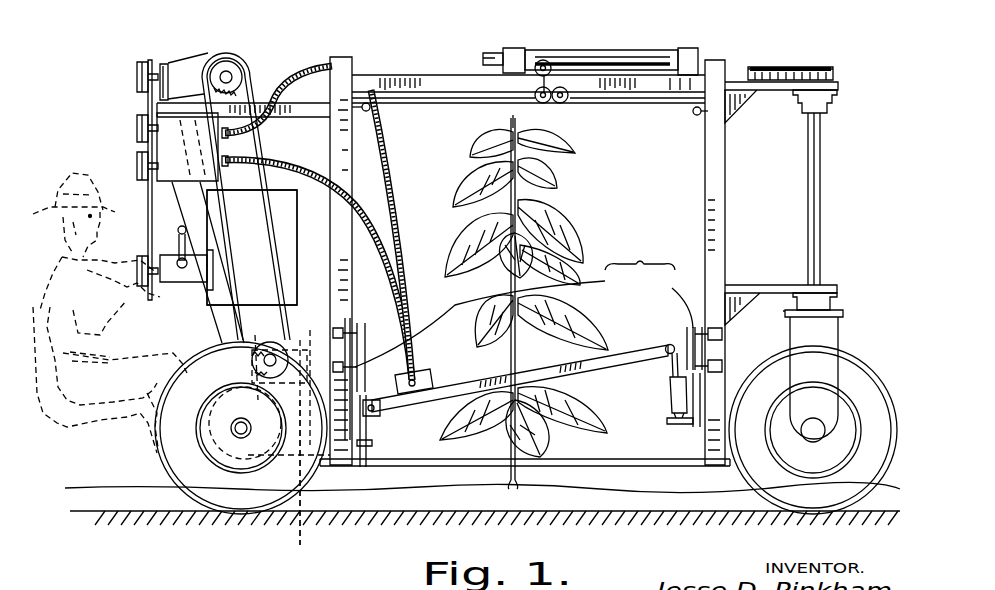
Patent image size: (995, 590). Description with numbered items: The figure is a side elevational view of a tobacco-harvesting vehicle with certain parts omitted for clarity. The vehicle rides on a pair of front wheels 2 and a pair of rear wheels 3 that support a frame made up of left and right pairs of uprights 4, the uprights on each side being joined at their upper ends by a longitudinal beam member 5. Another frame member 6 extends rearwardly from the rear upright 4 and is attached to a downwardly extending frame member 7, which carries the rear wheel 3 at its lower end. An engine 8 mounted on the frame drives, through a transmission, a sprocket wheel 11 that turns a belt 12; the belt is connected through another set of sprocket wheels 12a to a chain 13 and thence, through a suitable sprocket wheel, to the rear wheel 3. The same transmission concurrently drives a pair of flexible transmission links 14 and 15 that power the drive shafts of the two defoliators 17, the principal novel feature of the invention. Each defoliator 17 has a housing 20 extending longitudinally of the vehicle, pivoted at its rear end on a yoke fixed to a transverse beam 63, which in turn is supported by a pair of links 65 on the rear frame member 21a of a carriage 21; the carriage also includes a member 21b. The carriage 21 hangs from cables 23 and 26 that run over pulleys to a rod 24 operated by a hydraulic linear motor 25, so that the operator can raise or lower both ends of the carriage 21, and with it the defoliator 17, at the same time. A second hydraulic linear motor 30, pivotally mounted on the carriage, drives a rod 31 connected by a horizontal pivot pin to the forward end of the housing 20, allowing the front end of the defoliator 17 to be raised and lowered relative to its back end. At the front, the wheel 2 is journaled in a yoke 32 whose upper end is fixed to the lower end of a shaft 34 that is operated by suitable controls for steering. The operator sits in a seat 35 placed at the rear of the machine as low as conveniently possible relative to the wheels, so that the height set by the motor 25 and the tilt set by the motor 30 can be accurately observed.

The front wheel 2 is at (393, 378).
The rear wheel 3 is at (239, 497).
The upright 4 is at (334, 135).
The longitudinal beam member 5 is at (398, 76).
The frame member 6 is at (311, 70).
The downwardly extending frame member 7 is at (198, 328).
The engine 8 is at (262, 283).
The sprocket wheel 11 is at (224, 60).
The belt 12 is at (270, 232).
The sprocket wheels 12a is at (283, 340).
The chain 13 is at (305, 387).
The flexible transmission link 14 is at (252, 70).
The flexible transmission link 15 is at (366, 210).
The defoliator 17 is at (446, 359).
The housing 20 is at (588, 366).
The carriage 21 is at (640, 253).
The rear frame member 21a is at (497, 319).
The shield 21b is at (669, 300).
The cable 23 is at (420, 106).
The rod 24 is at (490, 52).
The hydraulic linear motor 25 is at (613, 50).
The cable 26 is at (628, 104).
The hydraulic linear motor 30 is at (670, 400).
The rod 31 is at (670, 372).
The yoke 32 is at (820, 364).
The shaft 34 is at (820, 190).
The seat 35 is at (80, 423).
The transverse beam 63 is at (524, 437).
The links 65 is at (368, 330).